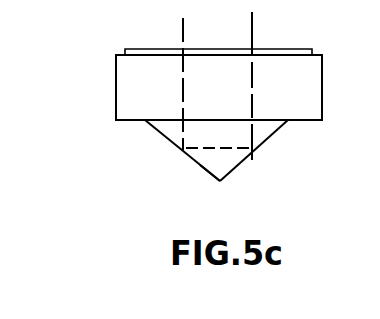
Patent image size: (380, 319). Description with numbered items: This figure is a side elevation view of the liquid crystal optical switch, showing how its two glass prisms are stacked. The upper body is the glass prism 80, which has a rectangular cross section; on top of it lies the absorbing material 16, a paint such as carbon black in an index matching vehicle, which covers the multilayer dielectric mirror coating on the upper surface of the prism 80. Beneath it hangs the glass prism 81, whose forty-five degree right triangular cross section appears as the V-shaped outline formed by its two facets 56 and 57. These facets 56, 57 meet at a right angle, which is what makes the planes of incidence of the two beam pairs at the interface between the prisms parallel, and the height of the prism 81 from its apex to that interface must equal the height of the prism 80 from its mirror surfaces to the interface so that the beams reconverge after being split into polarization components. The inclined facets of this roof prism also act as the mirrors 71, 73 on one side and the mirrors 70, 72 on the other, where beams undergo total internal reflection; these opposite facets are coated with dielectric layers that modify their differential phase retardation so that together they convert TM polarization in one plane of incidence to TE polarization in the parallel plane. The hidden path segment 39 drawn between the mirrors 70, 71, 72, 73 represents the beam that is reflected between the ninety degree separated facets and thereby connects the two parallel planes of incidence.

The absorbing material 16 is at (307, 51).
The glass prism 80 is at (128, 90).
The facet 56 is at (166, 138).
The facet 57 is at (266, 139).
The mirror 71 is at (142, 101).
The mirror 73 is at (182, 155).
The mirror 70 is at (296, 99).
The mirror 72 is at (254, 152).
The path segment 39 is at (212, 149).
The glass prism 81 is at (207, 166).